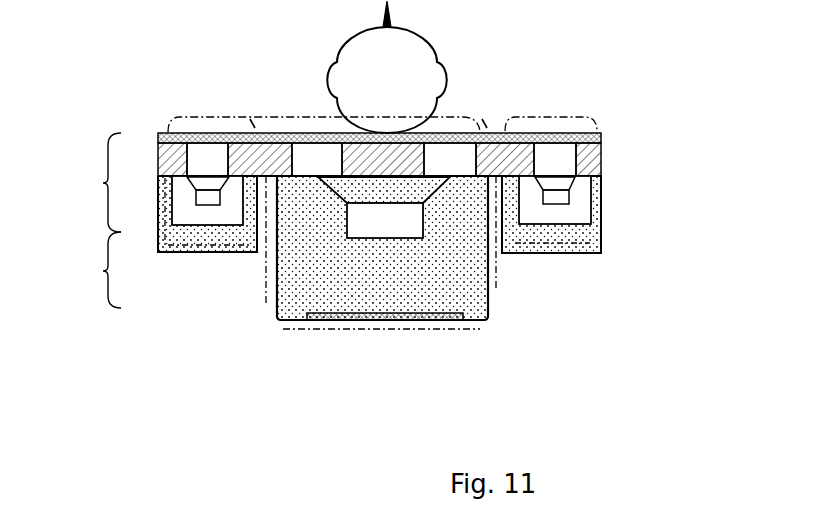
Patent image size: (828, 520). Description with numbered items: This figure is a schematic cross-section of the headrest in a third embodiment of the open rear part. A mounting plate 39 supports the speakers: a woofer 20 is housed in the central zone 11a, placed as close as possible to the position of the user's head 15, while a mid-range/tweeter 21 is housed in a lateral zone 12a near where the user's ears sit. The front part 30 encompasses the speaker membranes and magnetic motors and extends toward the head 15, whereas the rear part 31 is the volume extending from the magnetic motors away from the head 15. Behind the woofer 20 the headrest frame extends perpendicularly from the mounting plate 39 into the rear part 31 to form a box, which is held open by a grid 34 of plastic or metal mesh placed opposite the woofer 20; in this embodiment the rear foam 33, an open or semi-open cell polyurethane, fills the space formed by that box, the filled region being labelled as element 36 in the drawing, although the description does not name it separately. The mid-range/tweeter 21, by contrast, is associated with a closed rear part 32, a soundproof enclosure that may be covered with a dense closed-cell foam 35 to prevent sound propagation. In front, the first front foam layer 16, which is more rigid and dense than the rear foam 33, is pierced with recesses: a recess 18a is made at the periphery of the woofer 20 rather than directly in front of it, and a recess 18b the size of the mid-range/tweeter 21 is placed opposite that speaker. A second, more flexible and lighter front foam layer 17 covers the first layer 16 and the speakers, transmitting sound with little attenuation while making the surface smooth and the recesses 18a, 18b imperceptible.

The head 15 is at (413, 62).
The first front foam layer 16 is at (170, 131).
The second front foam layer 17 is at (601, 152).
The recess 18a is at (312, 155).
The recess 18b is at (555, 153).
The woofer 20 is at (375, 235).
The mid-range/tweeter 21 is at (560, 200).
The mounting plate 39 is at (600, 180).
The lateral zone 12a is at (548, 255).
The central zone 11a is at (497, 290).
The front part 30 is at (103, 183).
The rear part 31 is at (103, 271).
The closed rear part 32 is at (188, 213).
The rear foam 33 is at (300, 328).
The grid 34 is at (455, 320).
The foam 35 is at (173, 253).
The sealing resin body 36 is at (300, 297).